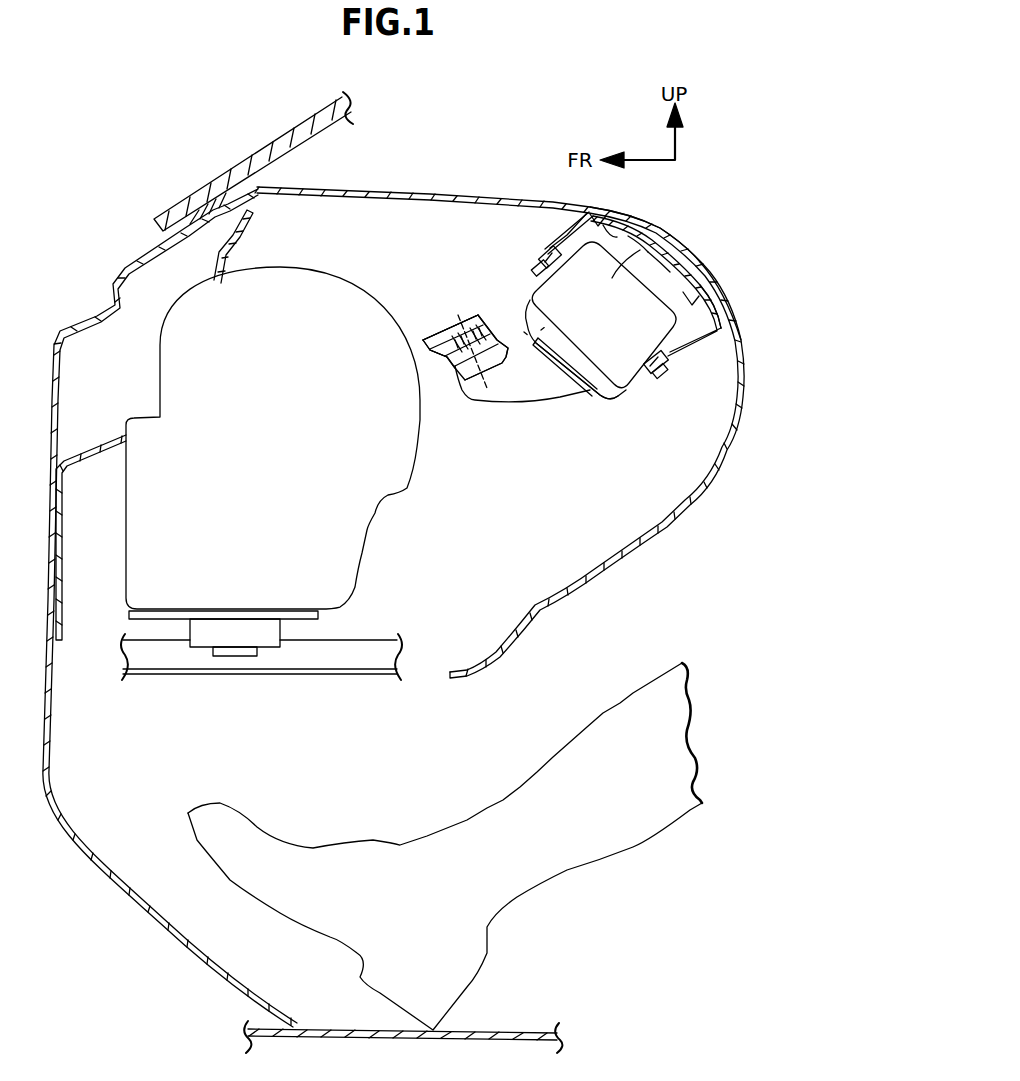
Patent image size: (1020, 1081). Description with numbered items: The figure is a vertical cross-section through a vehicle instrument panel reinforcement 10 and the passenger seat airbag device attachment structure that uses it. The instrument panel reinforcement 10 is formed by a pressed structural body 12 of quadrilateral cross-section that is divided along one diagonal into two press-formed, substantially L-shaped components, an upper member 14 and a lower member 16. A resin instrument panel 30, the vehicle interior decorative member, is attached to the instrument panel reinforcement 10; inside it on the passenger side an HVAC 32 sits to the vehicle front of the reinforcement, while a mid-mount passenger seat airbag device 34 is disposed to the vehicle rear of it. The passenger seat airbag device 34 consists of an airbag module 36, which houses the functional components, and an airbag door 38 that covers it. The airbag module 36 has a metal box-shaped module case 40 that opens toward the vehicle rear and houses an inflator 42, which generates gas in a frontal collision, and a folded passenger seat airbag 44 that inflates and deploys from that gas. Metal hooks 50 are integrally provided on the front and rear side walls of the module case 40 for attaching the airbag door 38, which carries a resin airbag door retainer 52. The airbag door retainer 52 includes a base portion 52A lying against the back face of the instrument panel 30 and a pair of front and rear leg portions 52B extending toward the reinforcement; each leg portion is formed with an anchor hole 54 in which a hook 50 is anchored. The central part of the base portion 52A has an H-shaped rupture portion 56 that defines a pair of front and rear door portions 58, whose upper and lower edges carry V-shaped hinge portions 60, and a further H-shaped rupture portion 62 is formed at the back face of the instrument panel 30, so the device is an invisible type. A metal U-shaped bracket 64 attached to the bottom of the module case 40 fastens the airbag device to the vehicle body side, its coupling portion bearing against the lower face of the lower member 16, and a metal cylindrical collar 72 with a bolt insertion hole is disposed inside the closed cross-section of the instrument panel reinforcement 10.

The instrument panel reinforcement 10 is at (450, 327).
The pressed structural body 12 is at (465, 292).
The upper member 14 is at (430, 337).
The lower member 16 is at (460, 382).
The instrument panel 30 is at (442, 188).
The HVAC 32 is at (362, 567).
The passenger seat airbag device 34 is at (712, 236).
The airbag module 36 is at (610, 407).
The airbag door 38 is at (712, 267).
The module case 40 is at (620, 394).
The inflator 42 is at (548, 395).
The passenger seat airbag 44 is at (560, 226).
The hooks 50 is at (543, 258).
The airbag door retainer 52 is at (735, 310).
The base portion 52A is at (715, 315).
The leg portions 52B is at (545, 258).
The anchor holes 54 is at (537, 275).
The rupture portion 56 is at (640, 240).
The door portions 58 is at (616, 273).
The hinge portions 60 is at (603, 220).
The rupture portion 62 is at (660, 255).
The bracket 64 is at (510, 402).
The collar 72 is at (447, 385).